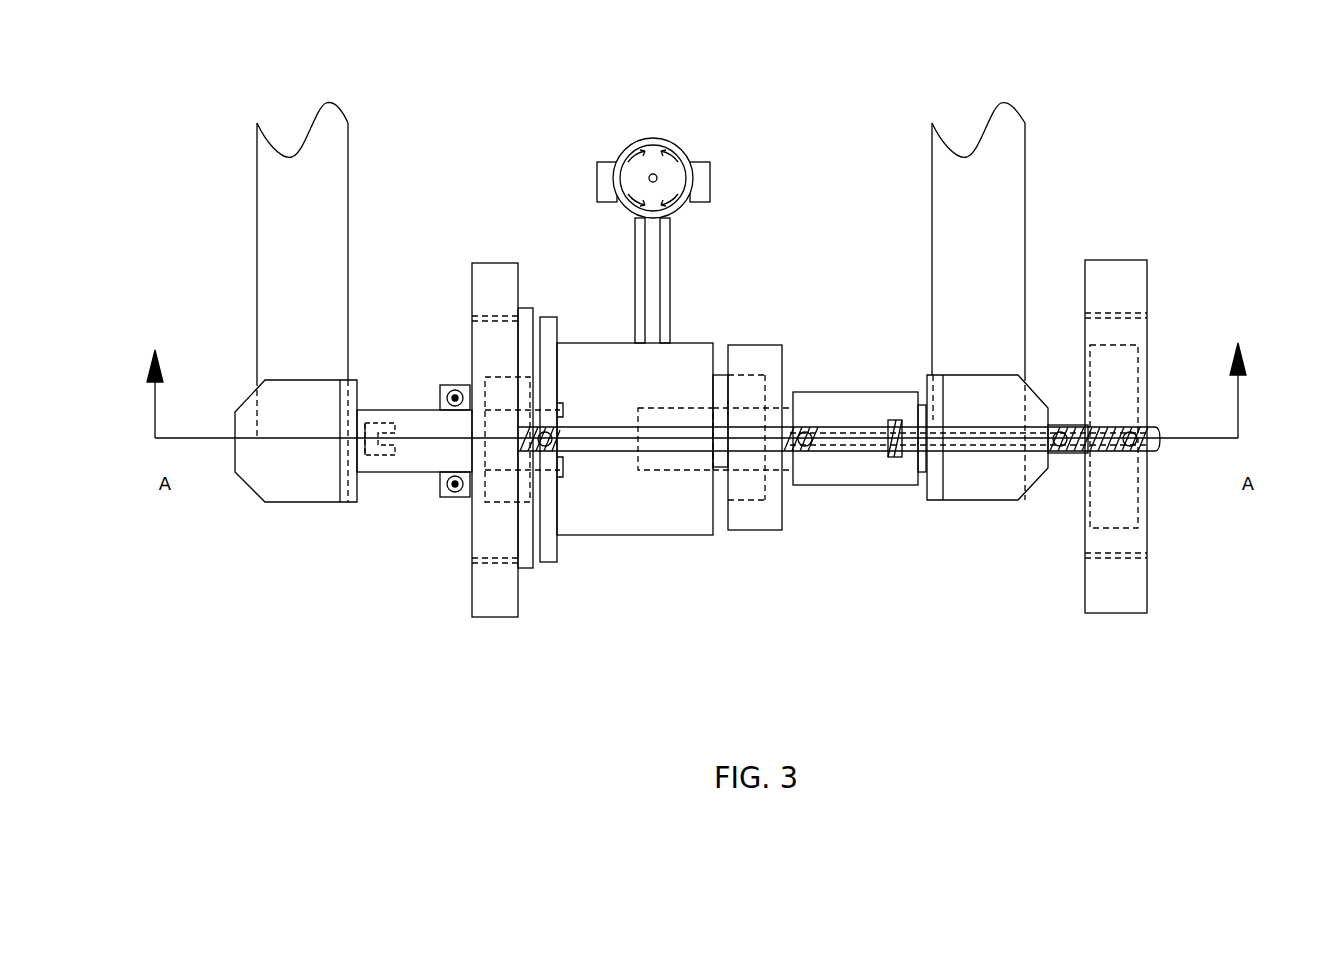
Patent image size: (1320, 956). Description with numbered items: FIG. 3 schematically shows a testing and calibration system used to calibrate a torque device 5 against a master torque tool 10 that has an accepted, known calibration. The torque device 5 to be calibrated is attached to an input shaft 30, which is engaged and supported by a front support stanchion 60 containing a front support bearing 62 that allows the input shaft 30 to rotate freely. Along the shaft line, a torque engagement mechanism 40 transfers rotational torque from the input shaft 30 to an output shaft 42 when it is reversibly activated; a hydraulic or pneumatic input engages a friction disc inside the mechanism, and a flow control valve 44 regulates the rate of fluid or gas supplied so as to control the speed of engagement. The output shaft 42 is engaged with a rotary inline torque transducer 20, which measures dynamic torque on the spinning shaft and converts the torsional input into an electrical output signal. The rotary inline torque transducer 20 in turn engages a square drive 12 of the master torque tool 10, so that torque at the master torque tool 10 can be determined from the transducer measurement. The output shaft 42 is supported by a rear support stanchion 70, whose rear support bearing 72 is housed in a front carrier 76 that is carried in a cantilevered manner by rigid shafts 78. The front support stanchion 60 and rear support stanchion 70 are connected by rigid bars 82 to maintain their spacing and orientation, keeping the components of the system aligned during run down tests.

The torque device 5 is at (280, 265).
The master torque tool 10 is at (975, 205).
The square drive 12 is at (375, 432).
The rotary inline torque transducer 20 is at (848, 467).
The input shaft 30 is at (418, 458).
The torque engagement mechanism 40 is at (635, 515).
The output shaft 42 is at (787, 415).
The flow control valve 44 is at (655, 165).
The front support stanchion 60 is at (495, 285).
The front support bearing 62 is at (535, 398).
The rear support stanchion 70 is at (1125, 288).
The rear support bearing 72 is at (722, 487).
The front carrier 76 is at (740, 345).
The rigid shafts 78 is at (1060, 447).
The rigid bars 82 is at (587, 447).